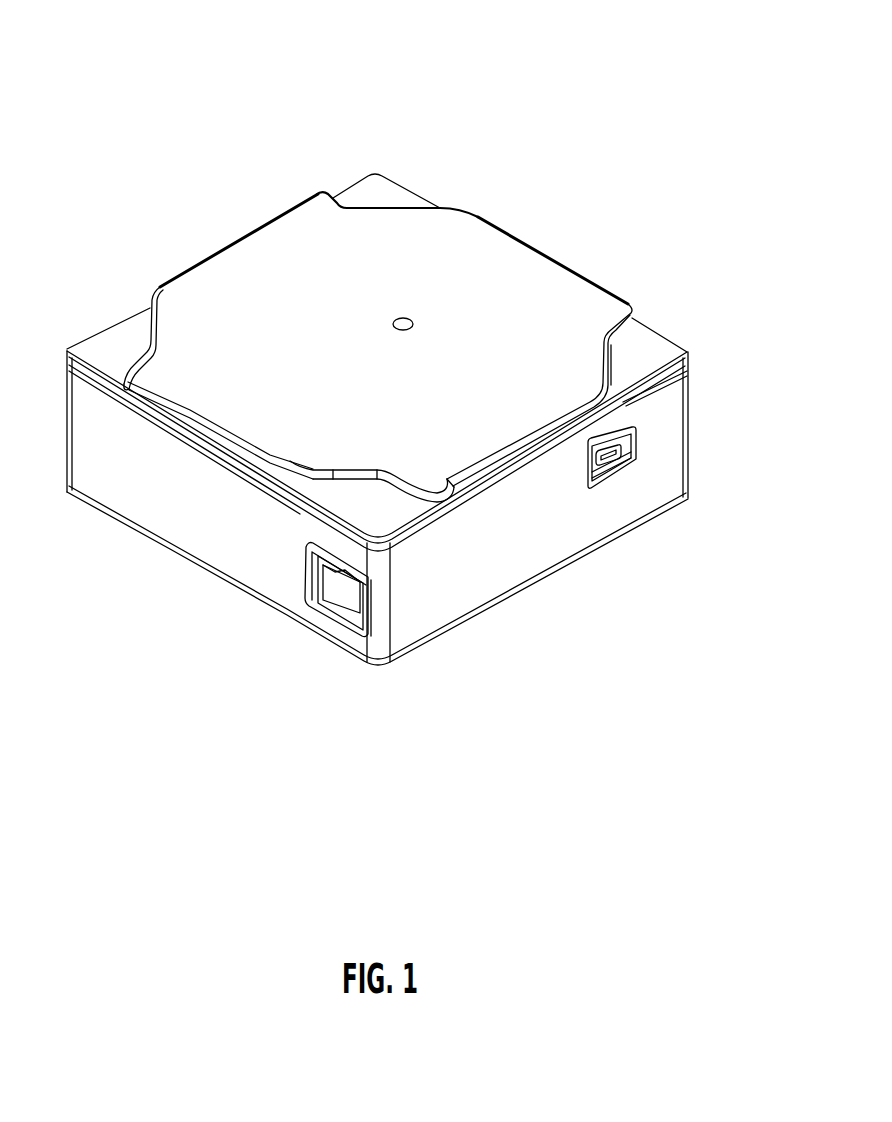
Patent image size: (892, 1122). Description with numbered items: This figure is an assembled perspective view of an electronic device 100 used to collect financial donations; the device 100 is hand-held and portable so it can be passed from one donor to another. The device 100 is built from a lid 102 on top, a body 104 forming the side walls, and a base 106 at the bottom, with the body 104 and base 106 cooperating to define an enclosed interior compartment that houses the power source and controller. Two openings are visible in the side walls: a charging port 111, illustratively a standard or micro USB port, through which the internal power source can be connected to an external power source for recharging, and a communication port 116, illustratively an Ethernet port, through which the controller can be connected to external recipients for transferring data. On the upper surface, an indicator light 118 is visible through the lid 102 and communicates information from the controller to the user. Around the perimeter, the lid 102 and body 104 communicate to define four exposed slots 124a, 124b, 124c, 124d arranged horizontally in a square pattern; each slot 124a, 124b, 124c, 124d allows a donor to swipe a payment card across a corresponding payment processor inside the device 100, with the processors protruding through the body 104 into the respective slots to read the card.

The electronic device 100 is at (628, 92).
The lid 102 is at (647, 355).
The body 104 is at (483, 577).
The base 106 is at (407, 653).
The charging port 111 is at (627, 477).
The communication port 116 is at (308, 610).
The indicator light 118 is at (393, 327).
The exposed slot 124a is at (212, 245).
The exposed slot 124b is at (557, 248).
The exposed slot 124c is at (507, 453).
The exposed slot 124d is at (178, 412).